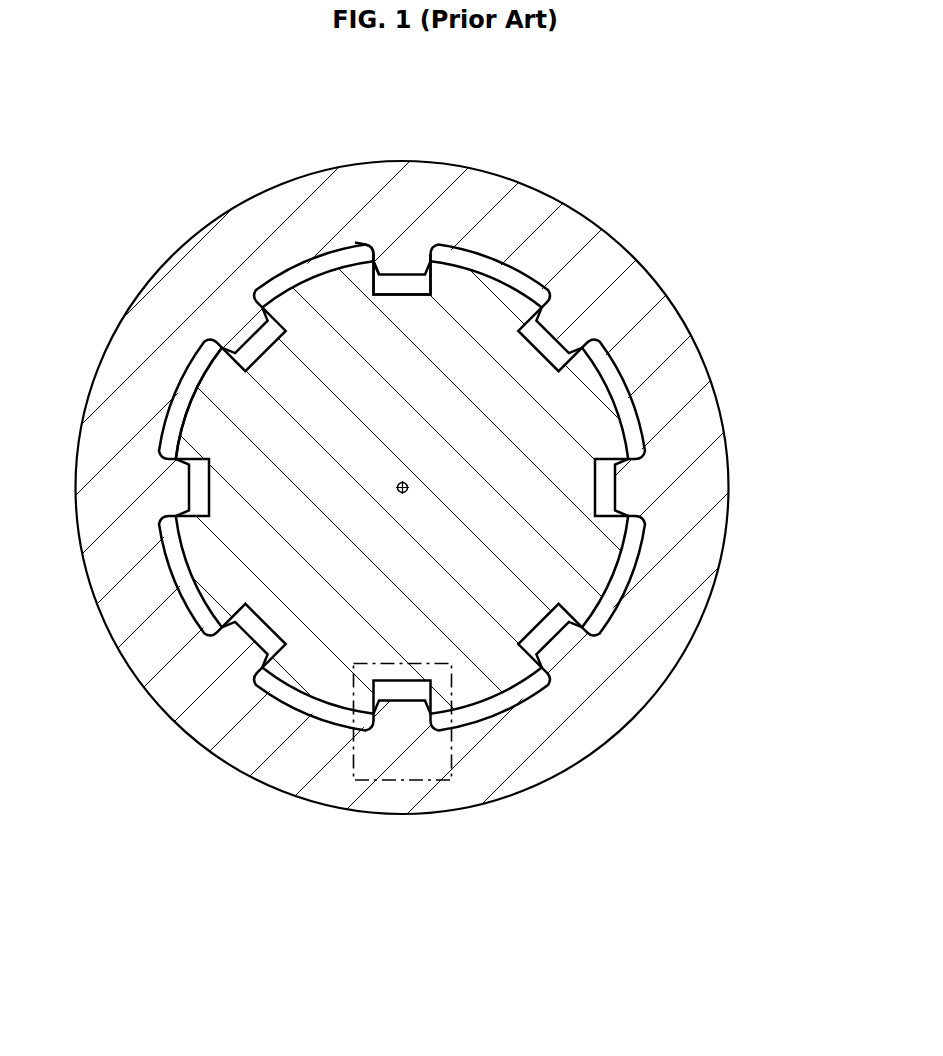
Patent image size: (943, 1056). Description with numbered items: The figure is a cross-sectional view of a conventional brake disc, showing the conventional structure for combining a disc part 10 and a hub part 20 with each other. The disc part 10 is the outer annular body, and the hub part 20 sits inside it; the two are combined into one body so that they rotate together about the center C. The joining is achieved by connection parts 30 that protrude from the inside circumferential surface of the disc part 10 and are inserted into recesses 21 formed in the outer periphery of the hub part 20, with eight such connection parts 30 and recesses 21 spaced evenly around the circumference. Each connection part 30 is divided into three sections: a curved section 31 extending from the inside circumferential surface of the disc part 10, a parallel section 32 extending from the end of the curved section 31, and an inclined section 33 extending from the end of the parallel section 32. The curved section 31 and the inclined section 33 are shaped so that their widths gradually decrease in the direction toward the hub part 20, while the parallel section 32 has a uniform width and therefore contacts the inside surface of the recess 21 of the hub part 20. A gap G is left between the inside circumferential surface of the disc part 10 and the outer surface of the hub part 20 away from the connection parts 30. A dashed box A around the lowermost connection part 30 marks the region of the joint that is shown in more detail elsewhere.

The disc part 10 is at (580, 226).
The hub part 20 is at (592, 427).
The recess 21 is at (551, 342).
The connection part 30 is at (407, 263).
The curved section 31 is at (347, 247).
The parallel section 32 is at (363, 253).
The inclined section 33 is at (371, 262).
The gap G is at (190, 385).
The rotation center C is at (410, 488).
The detail region A is at (402, 781).